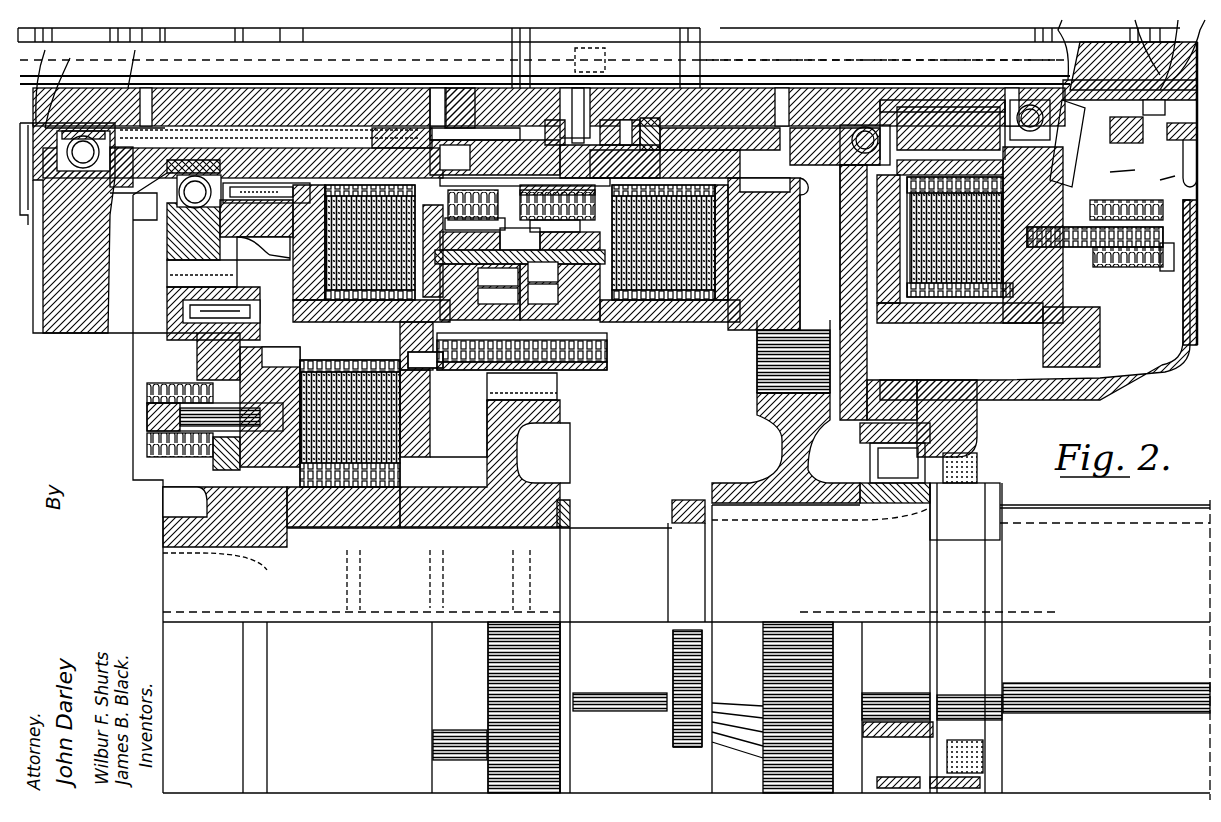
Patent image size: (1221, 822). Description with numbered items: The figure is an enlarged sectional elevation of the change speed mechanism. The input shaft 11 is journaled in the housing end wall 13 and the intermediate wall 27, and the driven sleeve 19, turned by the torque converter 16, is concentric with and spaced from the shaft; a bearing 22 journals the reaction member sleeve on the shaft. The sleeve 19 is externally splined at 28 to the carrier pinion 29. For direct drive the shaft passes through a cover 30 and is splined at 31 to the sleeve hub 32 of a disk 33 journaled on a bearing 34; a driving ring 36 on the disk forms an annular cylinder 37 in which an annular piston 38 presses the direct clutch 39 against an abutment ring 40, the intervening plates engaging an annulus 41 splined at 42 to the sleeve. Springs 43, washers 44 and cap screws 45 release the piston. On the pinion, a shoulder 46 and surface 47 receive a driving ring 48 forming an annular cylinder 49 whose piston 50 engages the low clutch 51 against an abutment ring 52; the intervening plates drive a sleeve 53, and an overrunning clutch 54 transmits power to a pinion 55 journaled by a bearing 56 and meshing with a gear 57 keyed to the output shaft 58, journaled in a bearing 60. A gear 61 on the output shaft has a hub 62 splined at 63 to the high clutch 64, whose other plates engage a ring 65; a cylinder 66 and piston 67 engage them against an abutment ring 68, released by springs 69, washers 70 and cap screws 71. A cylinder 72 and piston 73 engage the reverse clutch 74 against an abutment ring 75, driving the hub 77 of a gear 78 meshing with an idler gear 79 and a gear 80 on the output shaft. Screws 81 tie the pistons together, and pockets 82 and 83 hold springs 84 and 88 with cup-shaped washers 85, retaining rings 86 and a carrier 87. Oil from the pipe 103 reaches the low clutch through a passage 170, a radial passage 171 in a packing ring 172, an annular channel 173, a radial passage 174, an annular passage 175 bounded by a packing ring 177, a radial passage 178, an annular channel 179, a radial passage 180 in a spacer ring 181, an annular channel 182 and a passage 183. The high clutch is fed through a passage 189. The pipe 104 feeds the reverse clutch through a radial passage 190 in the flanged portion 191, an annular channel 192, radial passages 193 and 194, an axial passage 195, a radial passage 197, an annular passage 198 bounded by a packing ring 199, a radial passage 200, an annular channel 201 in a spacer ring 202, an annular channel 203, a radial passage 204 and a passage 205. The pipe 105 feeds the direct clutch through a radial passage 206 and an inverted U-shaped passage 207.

The driving or input shaft 11 is at (196, 54).
The housing end wall 13 is at (868, 360).
The hydraulic torque converter 16 is at (646, 322).
The driven sleeve 19 is at (300, 88).
The bearing 22 is at (83, 151).
The intermediate wall 27 is at (75, 333).
The external splines 28 is at (475, 88).
The carrier pinion 29 is at (558, 383).
The cover 30 is at (1127, 385).
The splines 31 is at (1132, 72).
The sleeve hub 32 is at (1088, 155).
The disk 33 is at (1100, 347).
The bearing 34 is at (1030, 100).
The driving ring 36 is at (940, 323).
The annular cylinder 37 is at (1126, 201).
The annular piston 38 is at (1010, 323).
The direct drive clutch 39 is at (965, 323).
The abutment ring 40 is at (884, 303).
The annulus 41 is at (950, 107).
The internal splines 42 is at (912, 100).
The springs 43 is at (1125, 268).
The washer 44 is at (1165, 271).
The cap screw 45 is at (1095, 236).
The annular shoulder 46 is at (522, 347).
The annular surface 47 is at (470, 180).
The driving ring 48 is at (300, 320).
The annular cylinder 49 is at (480, 292).
The annular piston 50 is at (498, 295).
The low speed clutch 51 is at (330, 243).
The abutment ring 52 is at (290, 258).
The sleeve 53 is at (258, 148).
The overrunning clutch 54 is at (252, 203).
The pinion 55 is at (170, 245).
The bearing 56 is at (178, 190).
The gear 57 is at (197, 337).
The output shaft 58 is at (605, 528).
The bearing 60 is at (900, 465).
The gear 61 is at (520, 455).
The hub 62 is at (458, 487).
The splines 63 is at (400, 470).
The high speed clutch 64 is at (420, 430).
The ring 65 is at (421, 346).
The annular cylinder 66 is at (270, 407).
The annular piston 67 is at (213, 455).
The abutment ring 68 is at (430, 393).
The springs 69 is at (147, 452).
The washer 70 is at (147, 392).
The cap screw 71 is at (147, 418).
The annular cylinder 72 is at (543, 294).
The piston 73 is at (560, 291).
The reverse clutch 74 is at (683, 322).
The abutment ring 75 is at (742, 295).
The hub 77 is at (764, 253).
The gear 78 is at (822, 205).
The idler gear 79 is at (762, 355).
The gear 80 is at (775, 437).
The screws 81 is at (570, 241).
The pockets 82 is at (473, 195).
The pockets 83 is at (557, 195).
The helical spring 84 is at (475, 209).
The cup-shaped washers 85 is at (520, 239).
The retaining rings 86 is at (470, 239).
The carrier 87 is at (520, 263).
The springs 88 is at (555, 210).
The pipe 103 is at (28, 215).
The pipe 104 is at (1190, 185).
The pipe 105 is at (1120, 171).
The passage 170 is at (100, 190).
The radial passage 171 is at (105, 110).
The packing ring 172 is at (125, 140).
The annular channel 173 is at (69, 85).
The radial passage 174 is at (42, 78).
The annular passage 175 is at (139, 61).
The packing ring 177 is at (525, 70).
The radial passage 178 is at (428, 88).
The annular channel 179 is at (375, 125).
The radial passage 180 is at (395, 125).
The spacer ring 181 is at (475, 114).
The annular channel 182 is at (495, 157).
The passage 183 is at (458, 157).
The passage 189 is at (163, 525).
The radial passage 190 is at (1137, 193).
The flanged portion 191 is at (1166, 173).
The annular channel 192 is at (1137, 37).
The radial passage 193 is at (1172, 45).
The radial passage 194 is at (1195, 40).
The axial passage 195 is at (1059, 40).
The radial passage 197 is at (601, 59).
The annular passage 198 is at (670, 80).
The packing ring 199 is at (700, 58).
The radial passage 200 is at (580, 113).
The annular channel 201 is at (554, 124).
The spacer ring 202 is at (620, 115).
The annular channel 203 is at (658, 125).
The radial passage 204 is at (630, 124).
The passage 205 is at (610, 161).
The radial passage 206 is at (1138, 130).
The U-shaped passage 207 is at (1154, 107).